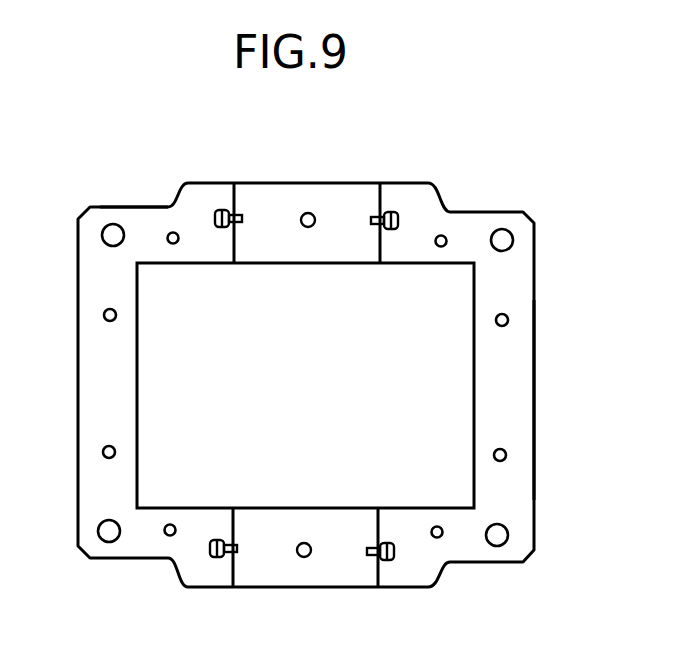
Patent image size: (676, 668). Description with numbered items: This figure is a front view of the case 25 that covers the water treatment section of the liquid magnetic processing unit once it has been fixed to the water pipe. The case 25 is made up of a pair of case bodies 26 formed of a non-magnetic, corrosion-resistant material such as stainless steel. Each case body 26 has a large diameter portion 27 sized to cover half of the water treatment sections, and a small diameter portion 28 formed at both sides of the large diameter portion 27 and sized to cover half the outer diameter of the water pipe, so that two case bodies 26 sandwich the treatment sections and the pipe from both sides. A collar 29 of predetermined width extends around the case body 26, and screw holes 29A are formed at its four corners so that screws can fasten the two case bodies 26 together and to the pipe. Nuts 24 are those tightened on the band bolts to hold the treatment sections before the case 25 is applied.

The nut 24 is at (222, 210).
The case 25 is at (148, 206).
The case body 26 is at (78, 296).
The large diameter portion 27 is at (452, 357).
The small diameter portion 28 is at (350, 196).
The collar 29 is at (531, 407).
The screw hole 29A is at (113, 224).